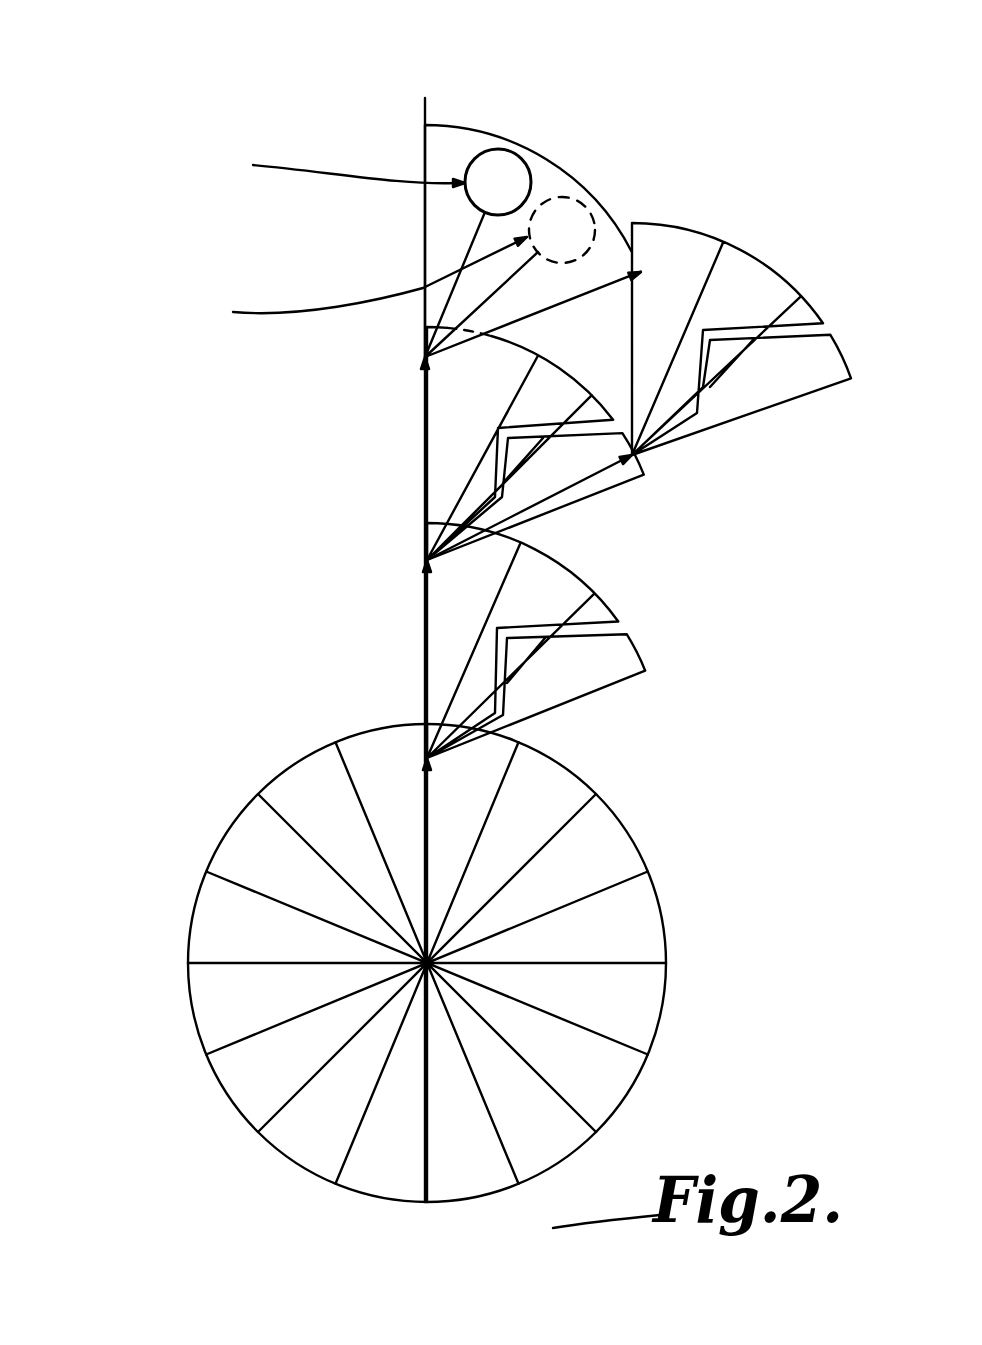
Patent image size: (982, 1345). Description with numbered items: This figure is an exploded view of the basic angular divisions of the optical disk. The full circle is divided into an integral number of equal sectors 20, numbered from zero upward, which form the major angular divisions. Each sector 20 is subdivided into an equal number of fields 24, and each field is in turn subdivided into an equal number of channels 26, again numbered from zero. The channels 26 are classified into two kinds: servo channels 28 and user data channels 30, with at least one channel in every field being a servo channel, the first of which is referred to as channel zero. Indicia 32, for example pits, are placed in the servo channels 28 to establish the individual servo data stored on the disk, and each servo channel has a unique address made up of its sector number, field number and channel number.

The sectors 20 is at (188, 963).
The fields 24 is at (440, 672).
The channels 26 is at (443, 465).
The servo channels 28 is at (652, 45).
The user data channels 30 is at (868, 205).
The indicia 32 is at (572, 192).